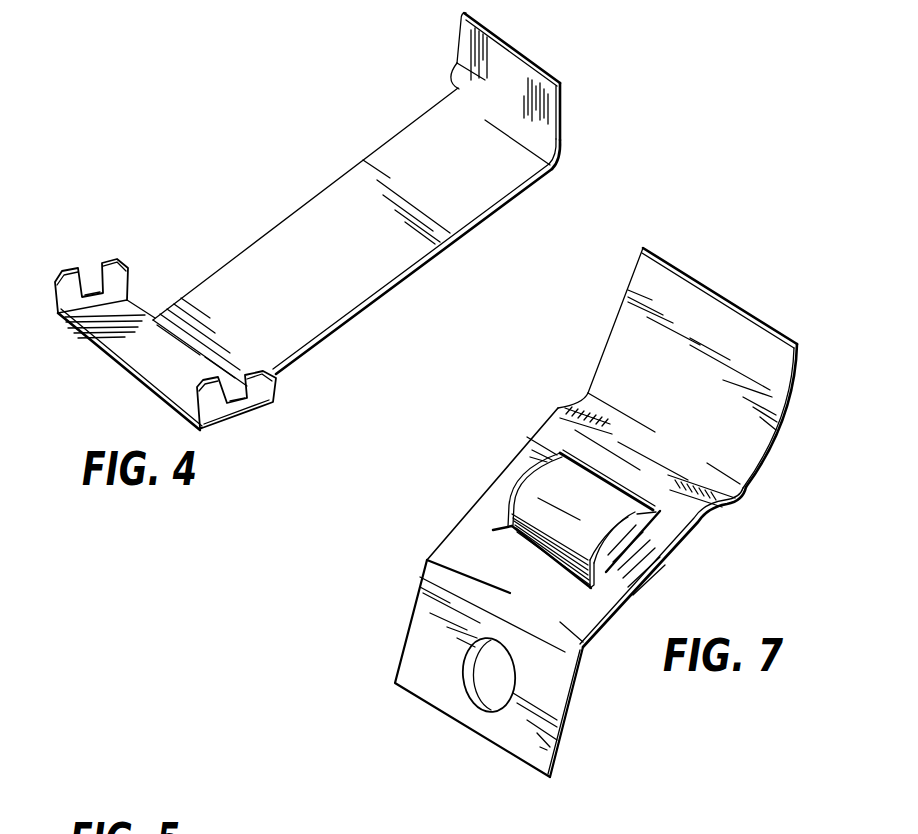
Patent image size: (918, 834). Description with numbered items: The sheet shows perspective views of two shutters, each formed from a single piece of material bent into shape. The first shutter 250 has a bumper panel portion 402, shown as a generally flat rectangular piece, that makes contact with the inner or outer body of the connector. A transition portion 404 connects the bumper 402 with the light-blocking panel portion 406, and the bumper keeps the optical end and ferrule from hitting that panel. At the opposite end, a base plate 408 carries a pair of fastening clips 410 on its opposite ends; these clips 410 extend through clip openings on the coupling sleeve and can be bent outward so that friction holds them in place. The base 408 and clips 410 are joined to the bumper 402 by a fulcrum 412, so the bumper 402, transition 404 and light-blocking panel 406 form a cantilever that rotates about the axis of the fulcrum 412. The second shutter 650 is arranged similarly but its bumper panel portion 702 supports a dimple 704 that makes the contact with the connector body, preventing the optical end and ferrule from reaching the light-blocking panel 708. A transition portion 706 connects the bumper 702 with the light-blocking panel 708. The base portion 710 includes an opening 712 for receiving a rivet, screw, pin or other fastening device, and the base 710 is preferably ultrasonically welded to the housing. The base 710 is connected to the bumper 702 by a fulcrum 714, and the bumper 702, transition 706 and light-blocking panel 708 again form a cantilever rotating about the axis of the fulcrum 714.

In FIG. 4, the shutter 250 is at (578, 157).
In FIG. 4, the bumper panel portion 402 is at (343, 201).
In FIG. 4, the transition portion 404 is at (460, 92).
In FIG. 4, the light-blocking panel portion 406 is at (470, 42).
In FIG. 4, the base plate 408 is at (126, 355).
In FIG. 4, the fastening clips 410 is at (68, 265).
In FIG. 4, the fulcrum 412 is at (213, 357).
In FIG. 7, the shutter 650 is at (742, 513).
In FIG. 7, the bumper panel portion 702 is at (518, 467).
In FIG. 7, the dimple 704 is at (510, 507).
In FIG. 7, the transition portion 706 is at (578, 377).
In FIG. 7, the light-blocking panel 708 is at (637, 327).
In FIG. 7, the base portion 710 is at (412, 642).
In FIG. 7, the opening 712 is at (478, 685).
In FIG. 7, the fulcrum 714 is at (575, 647).